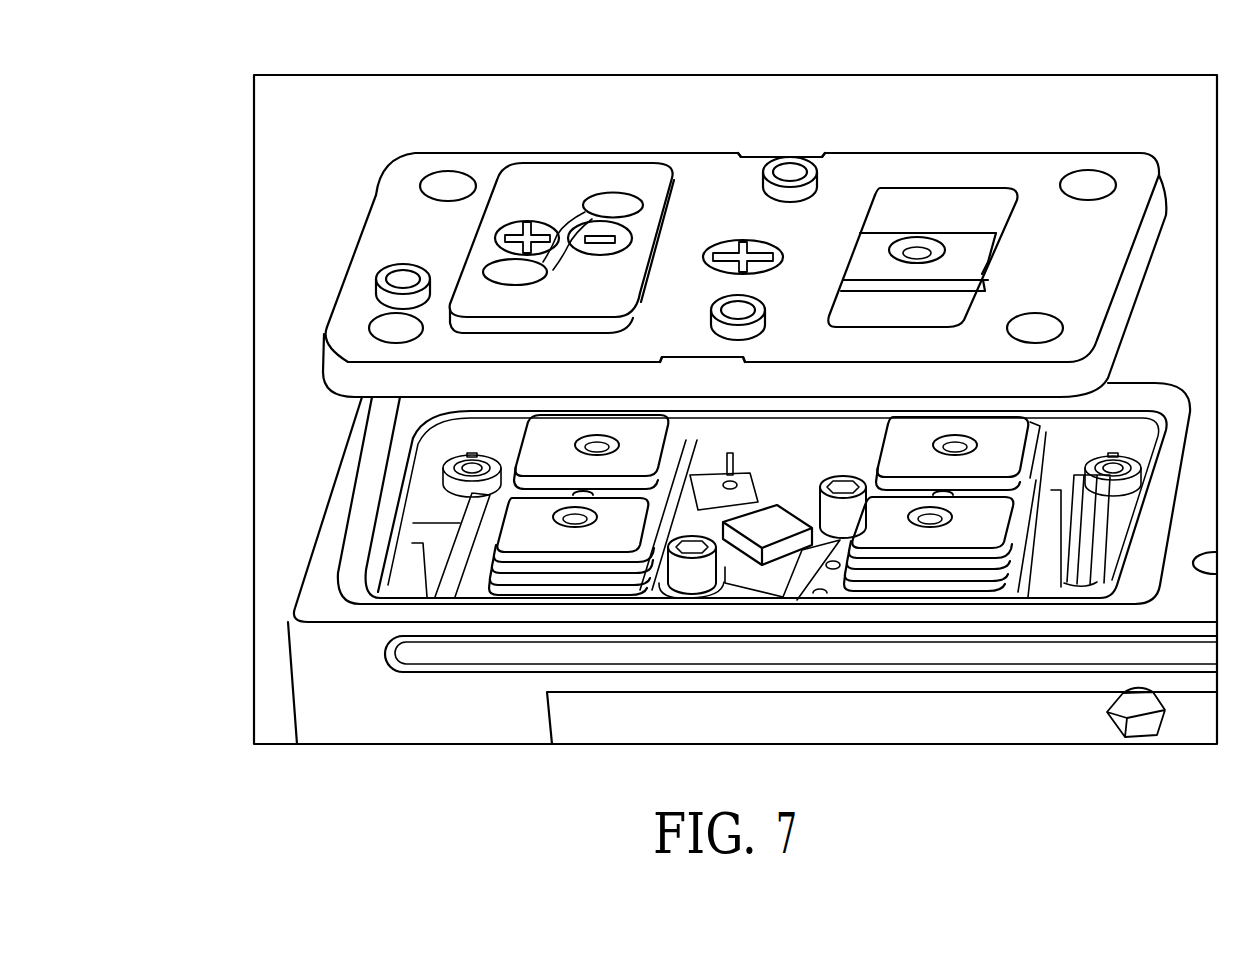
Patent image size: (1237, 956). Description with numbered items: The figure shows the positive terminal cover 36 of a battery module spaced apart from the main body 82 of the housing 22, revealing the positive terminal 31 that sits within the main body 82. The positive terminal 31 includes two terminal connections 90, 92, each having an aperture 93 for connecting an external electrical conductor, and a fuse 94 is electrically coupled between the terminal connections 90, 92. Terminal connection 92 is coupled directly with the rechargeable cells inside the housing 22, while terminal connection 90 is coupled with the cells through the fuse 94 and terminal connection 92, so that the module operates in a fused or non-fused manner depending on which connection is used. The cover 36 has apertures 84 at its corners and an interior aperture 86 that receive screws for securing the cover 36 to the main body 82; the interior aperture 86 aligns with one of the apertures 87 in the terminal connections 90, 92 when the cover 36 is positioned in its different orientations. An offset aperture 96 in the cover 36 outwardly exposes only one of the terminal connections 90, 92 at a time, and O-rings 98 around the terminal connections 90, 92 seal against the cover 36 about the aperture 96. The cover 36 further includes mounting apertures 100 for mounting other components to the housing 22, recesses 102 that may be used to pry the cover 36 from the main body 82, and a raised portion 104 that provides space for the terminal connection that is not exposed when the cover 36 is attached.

The housing 22 is at (282, 677).
The positive terminal 31 is at (835, 582).
The positive terminal cover 36 is at (890, 130).
The main body 82 is at (1028, 720).
The apertures 84 is at (392, 326).
The interior aperture 86 is at (920, 250).
The apertures 87 is at (942, 492).
The terminal connection 90 is at (1045, 432).
The terminal connection 92 is at (520, 438).
The aperture 93 is at (597, 512).
The fuse 94 is at (765, 520).
The offset aperture 96 is at (1010, 214).
The O-rings 98 is at (508, 588).
The mounting apertures 100 is at (403, 279).
The recesses 102 is at (764, 153).
The raised portion 104 is at (533, 340).